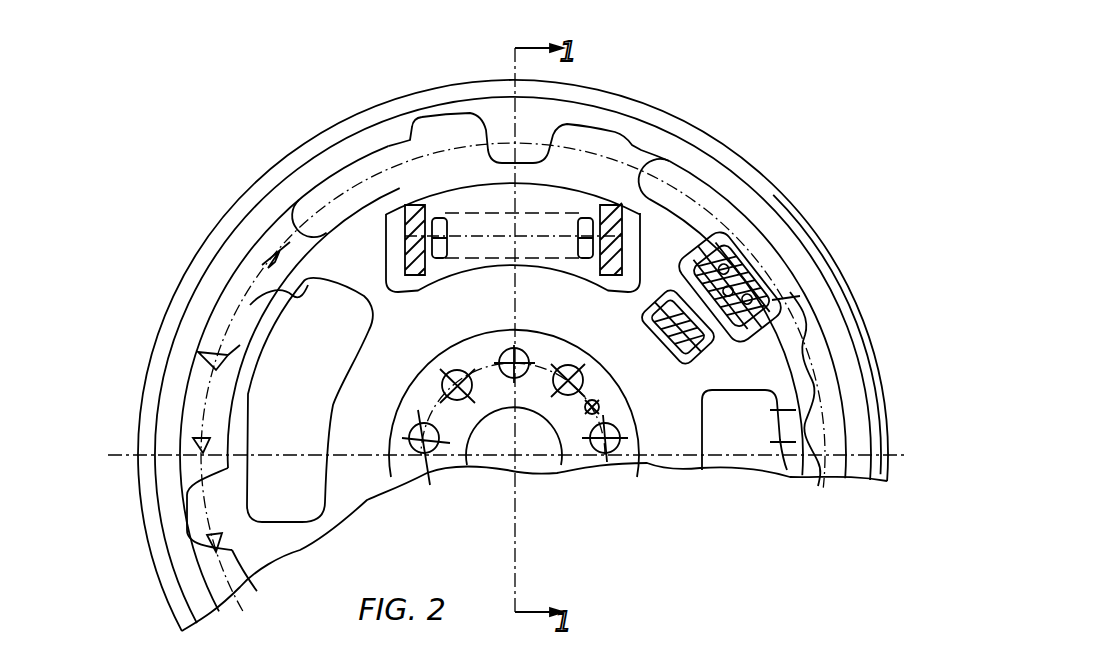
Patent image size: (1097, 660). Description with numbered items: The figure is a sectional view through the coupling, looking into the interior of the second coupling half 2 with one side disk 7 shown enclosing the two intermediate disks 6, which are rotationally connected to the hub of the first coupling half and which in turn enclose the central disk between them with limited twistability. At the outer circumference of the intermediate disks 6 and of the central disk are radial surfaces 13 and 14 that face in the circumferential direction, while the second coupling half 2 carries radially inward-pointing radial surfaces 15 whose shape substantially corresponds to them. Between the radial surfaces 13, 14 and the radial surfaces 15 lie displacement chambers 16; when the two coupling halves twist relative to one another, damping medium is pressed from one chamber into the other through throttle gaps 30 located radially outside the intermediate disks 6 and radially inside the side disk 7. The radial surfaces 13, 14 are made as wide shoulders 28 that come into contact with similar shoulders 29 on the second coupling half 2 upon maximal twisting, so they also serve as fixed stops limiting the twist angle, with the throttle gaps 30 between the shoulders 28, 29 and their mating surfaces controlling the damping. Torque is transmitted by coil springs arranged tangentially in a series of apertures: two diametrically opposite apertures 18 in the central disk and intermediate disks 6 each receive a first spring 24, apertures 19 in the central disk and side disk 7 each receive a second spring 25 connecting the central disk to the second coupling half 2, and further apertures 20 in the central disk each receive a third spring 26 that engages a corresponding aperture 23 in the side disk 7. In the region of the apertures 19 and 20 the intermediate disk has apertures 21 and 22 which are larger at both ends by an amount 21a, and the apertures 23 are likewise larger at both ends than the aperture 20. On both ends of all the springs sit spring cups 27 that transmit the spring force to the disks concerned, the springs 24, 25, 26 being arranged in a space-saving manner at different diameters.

The second coupling half 2 is at (732, 432).
The intermediate disks 6 is at (777, 355).
The side disk 7 is at (853, 405).
The radial surfaces 13 is at (213, 360).
The radial surfaces 14 is at (200, 357).
The radial surfaces 15 is at (180, 435).
The displacement chambers 16 is at (492, 130).
The apertures 18 is at (668, 348).
The apertures 19 is at (470, 203).
The apertures 20 is at (758, 322).
The apertures 21 is at (262, 407).
The amount 21a is at (673, 163).
The apertures 22 is at (773, 310).
The apertures 23 is at (758, 322).
The first spring 24 is at (672, 345).
The second spring 25 is at (572, 172).
The third spring 26 is at (735, 275).
The spring cups 27 is at (430, 190).
The shoulders 28 is at (220, 307).
The shoulders 29 is at (297, 227).
The throttle gaps 30 is at (257, 262).